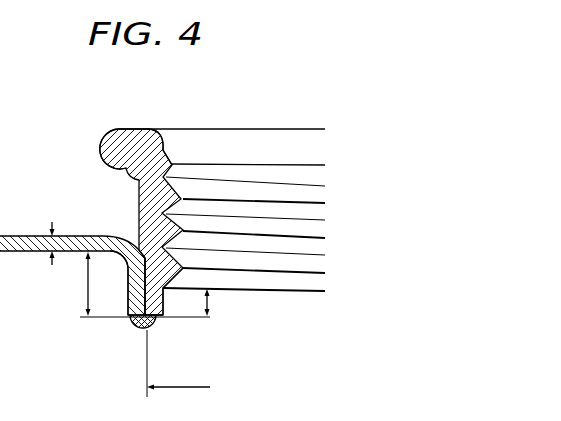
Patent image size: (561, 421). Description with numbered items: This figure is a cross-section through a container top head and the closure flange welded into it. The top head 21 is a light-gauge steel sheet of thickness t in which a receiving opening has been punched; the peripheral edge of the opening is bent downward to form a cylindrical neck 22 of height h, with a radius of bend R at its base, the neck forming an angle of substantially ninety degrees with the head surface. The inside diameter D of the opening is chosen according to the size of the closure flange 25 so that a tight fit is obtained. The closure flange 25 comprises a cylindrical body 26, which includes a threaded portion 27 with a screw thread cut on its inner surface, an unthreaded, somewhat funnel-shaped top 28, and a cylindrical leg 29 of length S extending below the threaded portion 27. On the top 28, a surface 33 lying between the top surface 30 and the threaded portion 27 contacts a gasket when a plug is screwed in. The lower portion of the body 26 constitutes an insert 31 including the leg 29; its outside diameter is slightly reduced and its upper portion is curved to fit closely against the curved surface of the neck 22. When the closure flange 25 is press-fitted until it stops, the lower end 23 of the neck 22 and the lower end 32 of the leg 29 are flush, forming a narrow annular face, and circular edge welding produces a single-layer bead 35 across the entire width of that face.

The top head 21 is at (30, 235).
The cylindrical neck 22 is at (133, 303).
The lower end of the neck 23 is at (141, 330).
The closure flange 25 is at (268, 124).
The cylindrical body 26 is at (136, 202).
The threaded portion 27 is at (282, 270).
The unthreaded top 28 is at (118, 147).
The cylindrical leg 29 is at (143, 310).
The top surface 30 is at (161, 128).
The insert 31 is at (162, 296).
The lower end of the leg 32 is at (153, 310).
The surface 33 is at (164, 148).
The bead 35 is at (143, 333).
The thickness of the top head t is at (53, 246).
The height of the neck h is at (87, 283).
The radius of bend R is at (122, 268).
The length of the leg S is at (209, 306).
The inside diameter of the opening D is at (188, 365).